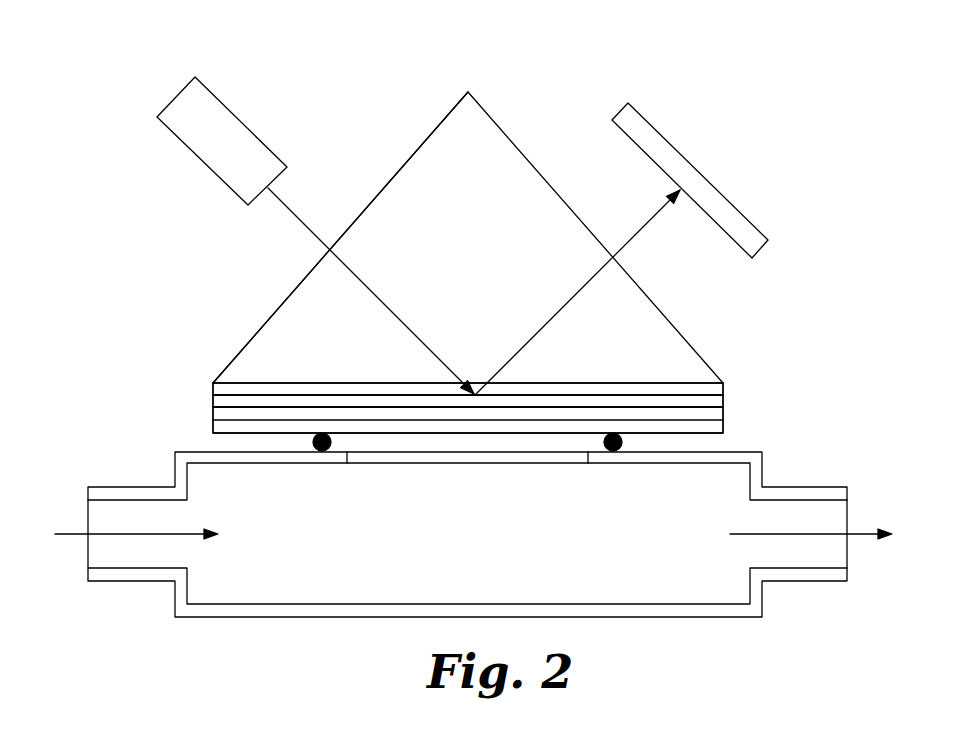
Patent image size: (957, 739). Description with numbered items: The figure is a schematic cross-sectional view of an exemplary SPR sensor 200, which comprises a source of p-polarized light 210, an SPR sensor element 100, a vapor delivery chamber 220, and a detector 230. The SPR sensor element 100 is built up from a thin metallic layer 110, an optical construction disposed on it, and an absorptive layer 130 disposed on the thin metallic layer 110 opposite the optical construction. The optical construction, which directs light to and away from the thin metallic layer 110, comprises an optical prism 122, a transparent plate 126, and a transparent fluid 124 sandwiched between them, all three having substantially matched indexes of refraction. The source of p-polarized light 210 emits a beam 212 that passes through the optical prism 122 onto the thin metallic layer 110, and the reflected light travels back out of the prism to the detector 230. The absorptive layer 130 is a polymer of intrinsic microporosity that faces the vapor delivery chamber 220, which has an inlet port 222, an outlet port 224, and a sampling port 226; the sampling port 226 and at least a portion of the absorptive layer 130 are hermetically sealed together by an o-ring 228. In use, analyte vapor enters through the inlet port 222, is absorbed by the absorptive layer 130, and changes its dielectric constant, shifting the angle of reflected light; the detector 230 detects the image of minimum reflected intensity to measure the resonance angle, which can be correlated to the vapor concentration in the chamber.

The SPR sensor element 100 is at (482, 98).
The thin metallic layer 110 is at (213, 414).
The optical prism 122 is at (292, 290).
The transparent fluid 124 is at (223, 390).
The transparent plate 126 is at (220, 402).
The absorptive layer 130 is at (717, 428).
The SPR sensor 200 is at (466, 549).
The source of p-polarized light 210 is at (208, 100).
The light beam 212 is at (308, 227).
The vapor delivery chamber 220 is at (680, 608).
The inlet port 222 is at (88, 545).
The outlet port 224 is at (848, 552).
The sampling port 226 is at (587, 457).
The o-ring 228 is at (315, 448).
The detector 230 is at (663, 152).